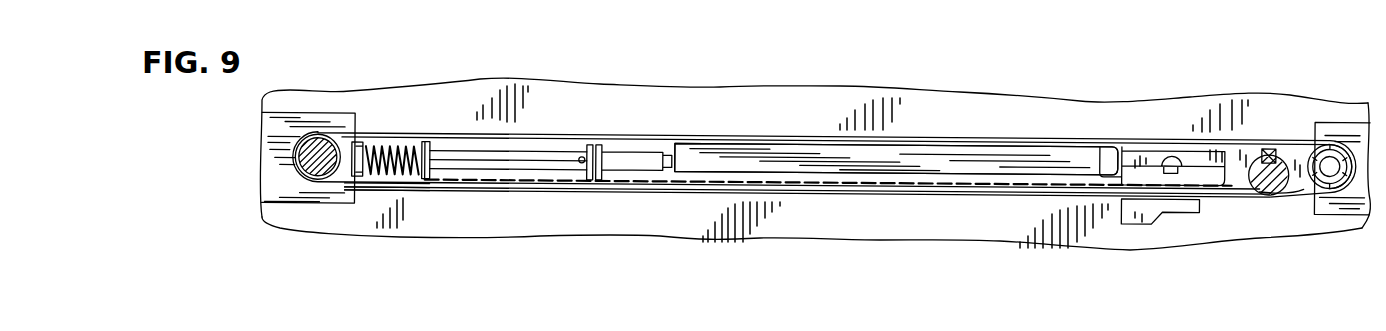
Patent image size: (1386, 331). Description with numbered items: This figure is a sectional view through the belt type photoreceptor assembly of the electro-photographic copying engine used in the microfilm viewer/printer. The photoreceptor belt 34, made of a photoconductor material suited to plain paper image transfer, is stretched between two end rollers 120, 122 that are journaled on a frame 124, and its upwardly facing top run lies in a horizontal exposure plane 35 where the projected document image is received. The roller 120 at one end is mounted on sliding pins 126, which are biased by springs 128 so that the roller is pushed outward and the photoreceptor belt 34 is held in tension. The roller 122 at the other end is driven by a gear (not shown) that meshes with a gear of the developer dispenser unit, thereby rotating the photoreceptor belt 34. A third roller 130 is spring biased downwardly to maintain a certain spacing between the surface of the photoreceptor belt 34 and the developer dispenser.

The photoreceptor belt 34 is at (410, 186).
The horizontal exposure plane 35 is at (773, 133).
The end roller 120 is at (318, 148).
The end roller 122 is at (1338, 148).
The frame 124 is at (1005, 170).
The sliding pins 126 is at (527, 153).
The springs 128 is at (412, 150).
The third roller 130 is at (1278, 195).